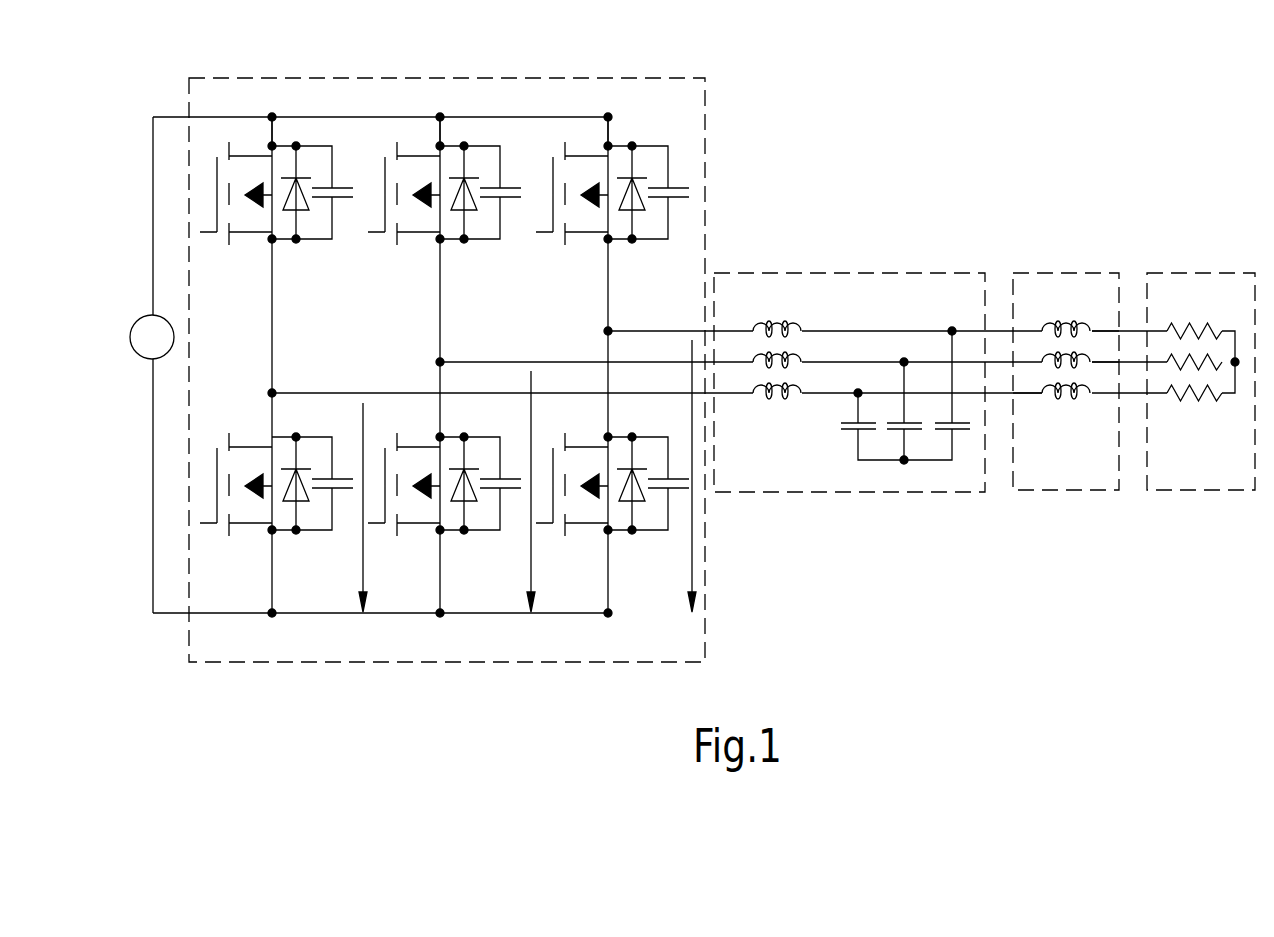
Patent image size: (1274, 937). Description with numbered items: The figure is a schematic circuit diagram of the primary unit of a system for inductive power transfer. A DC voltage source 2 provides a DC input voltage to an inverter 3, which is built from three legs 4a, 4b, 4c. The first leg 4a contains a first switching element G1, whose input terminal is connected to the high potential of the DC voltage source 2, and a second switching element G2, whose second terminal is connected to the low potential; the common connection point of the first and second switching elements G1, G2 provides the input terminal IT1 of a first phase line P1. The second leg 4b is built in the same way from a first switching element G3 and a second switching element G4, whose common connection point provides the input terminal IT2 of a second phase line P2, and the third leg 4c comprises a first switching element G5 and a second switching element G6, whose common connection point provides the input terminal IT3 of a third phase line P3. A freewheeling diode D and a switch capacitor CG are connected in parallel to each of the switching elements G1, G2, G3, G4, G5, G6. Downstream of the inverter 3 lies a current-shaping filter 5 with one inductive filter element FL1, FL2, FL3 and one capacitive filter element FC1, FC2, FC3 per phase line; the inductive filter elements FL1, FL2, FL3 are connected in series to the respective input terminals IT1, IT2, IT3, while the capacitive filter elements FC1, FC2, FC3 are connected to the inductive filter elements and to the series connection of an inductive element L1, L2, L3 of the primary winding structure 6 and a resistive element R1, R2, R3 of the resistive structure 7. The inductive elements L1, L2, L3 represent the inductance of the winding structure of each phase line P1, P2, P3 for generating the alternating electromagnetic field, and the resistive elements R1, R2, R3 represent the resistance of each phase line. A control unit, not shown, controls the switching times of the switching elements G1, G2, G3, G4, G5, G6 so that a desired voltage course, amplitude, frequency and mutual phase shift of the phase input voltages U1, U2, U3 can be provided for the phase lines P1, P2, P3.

The DC voltage source 2 is at (133, 350).
The inverter 3 is at (246, 663).
The first leg 4a is at (268, 130).
The second leg 4b is at (436, 130).
The third leg 4c is at (604, 130).
The current-shaping filter 5 is at (815, 493).
The primary winding structure 6 is at (1053, 272).
The resistive structure 7 is at (1197, 272).
The first switching element G1 is at (238, 219).
The second switching element G2 is at (238, 512).
The first switching element G3 is at (405, 219).
The second switching element G4 is at (406, 512).
The first switching element G5 is at (573, 219).
The second switching element G6 is at (574, 512).
The freewheeling diode D is at (470, 338).
The switch capacitor CG is at (505, 342).
The input terminal IT1 is at (275, 390).
The input terminal IT2 is at (443, 359).
The input terminal IT3 is at (611, 328).
The phase input voltage U1 is at (352, 433).
The phase input voltage U2 is at (520, 433).
The phase input voltage U3 is at (692, 442).
The inductive filter element FL1 is at (808, 372).
The inductive filter element FL2 is at (808, 341).
The inductive filter element FL3 is at (808, 310).
The capacitive filter element FC1 is at (851, 421).
The capacitive filter element FC2 is at (917, 410).
The capacitive filter element FC3 is at (958, 432).
The inductive element L1 is at (1076, 393).
The inductive element L2 is at (1055, 360).
The inductive element L3 is at (1044, 327).
The first phase line P1 is at (1100, 325).
The second phase line P2 is at (1100, 363).
The third phase line P3 is at (1027, 395).
The resistive element R1 is at (1188, 330).
The resistive element R2 is at (1185, 363).
The resistive element R3 is at (1213, 393).